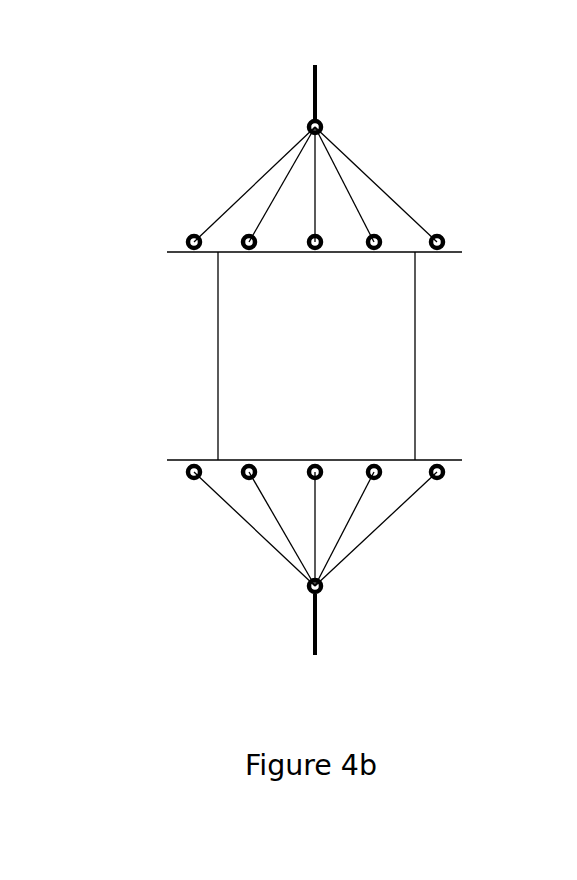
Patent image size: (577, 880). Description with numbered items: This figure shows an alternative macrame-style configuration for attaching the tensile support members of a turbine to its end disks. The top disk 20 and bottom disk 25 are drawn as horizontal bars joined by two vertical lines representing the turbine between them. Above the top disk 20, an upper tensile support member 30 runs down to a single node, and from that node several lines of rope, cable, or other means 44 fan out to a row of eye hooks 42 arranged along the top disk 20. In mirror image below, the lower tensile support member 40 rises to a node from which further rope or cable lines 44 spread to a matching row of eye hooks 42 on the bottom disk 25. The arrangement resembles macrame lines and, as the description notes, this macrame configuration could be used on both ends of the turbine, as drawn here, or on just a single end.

The top disk 20 is at (449, 260).
The bottom disk 25 is at (459, 454).
The tensile support member 30 is at (319, 90).
The tensile support member 40 is at (312, 624).
The eye hooks 42 is at (183, 229).
The rope, cable, and other means 44 is at (383, 183).